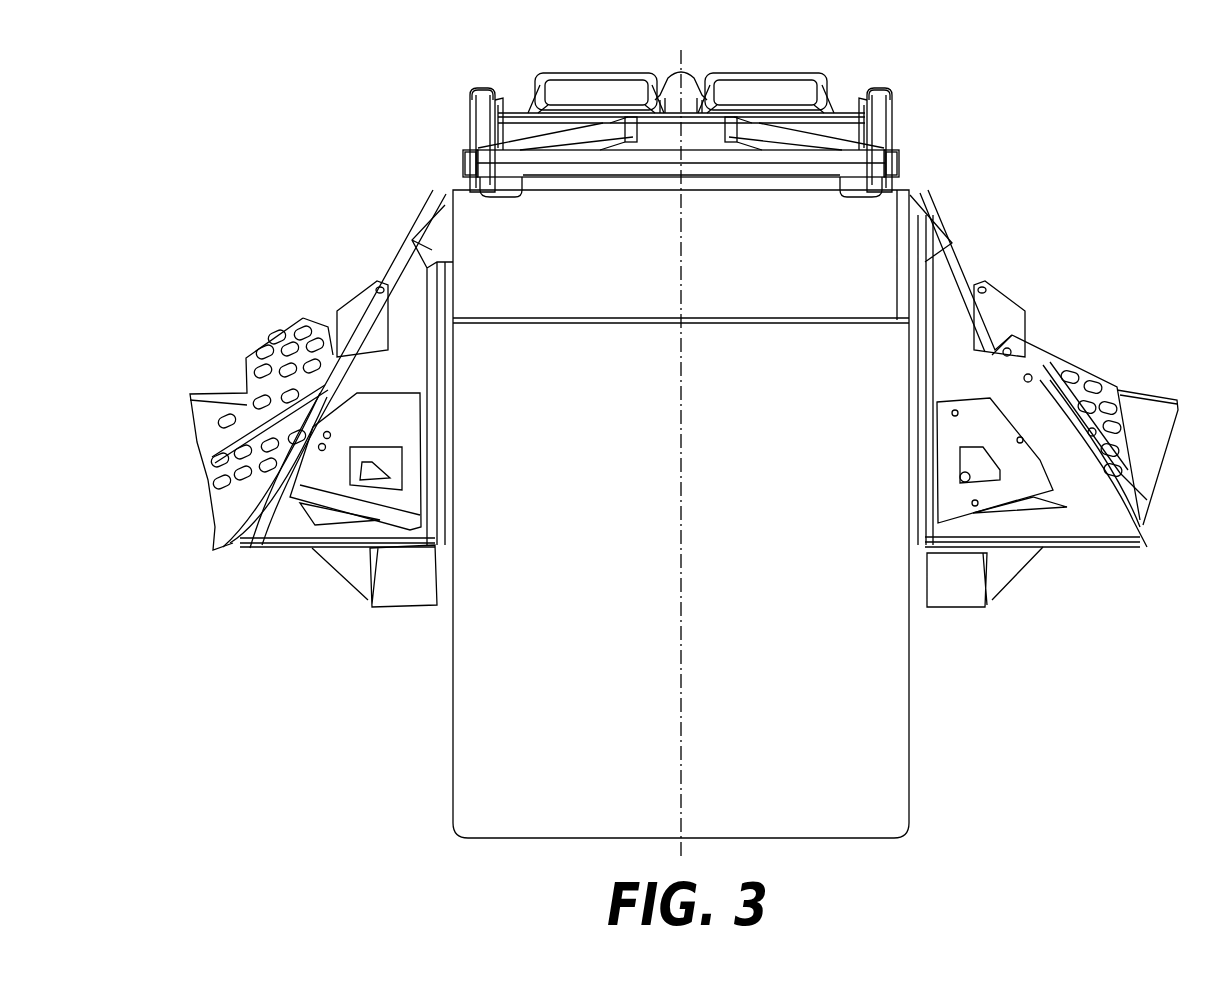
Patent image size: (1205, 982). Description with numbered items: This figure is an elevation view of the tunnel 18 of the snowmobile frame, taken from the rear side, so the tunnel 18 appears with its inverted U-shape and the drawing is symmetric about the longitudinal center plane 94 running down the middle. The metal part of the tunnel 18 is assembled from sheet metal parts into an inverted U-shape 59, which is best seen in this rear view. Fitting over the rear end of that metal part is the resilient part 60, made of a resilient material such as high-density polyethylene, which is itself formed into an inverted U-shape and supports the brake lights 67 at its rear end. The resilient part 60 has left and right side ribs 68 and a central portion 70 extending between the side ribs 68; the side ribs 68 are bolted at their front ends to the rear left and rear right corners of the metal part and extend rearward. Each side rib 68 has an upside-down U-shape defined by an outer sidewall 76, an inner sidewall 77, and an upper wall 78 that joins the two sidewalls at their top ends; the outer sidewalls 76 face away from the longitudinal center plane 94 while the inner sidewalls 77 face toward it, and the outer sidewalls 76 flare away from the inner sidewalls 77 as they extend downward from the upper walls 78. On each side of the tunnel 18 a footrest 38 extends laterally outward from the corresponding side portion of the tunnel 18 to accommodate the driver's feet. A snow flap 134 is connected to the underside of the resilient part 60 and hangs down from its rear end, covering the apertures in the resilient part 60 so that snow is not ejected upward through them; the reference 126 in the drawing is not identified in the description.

The tunnel 18 is at (170, 68).
The cab frame assembly 126 is at (175, 112).
The footrest 38 is at (379, 444).
The inverted U-shape 59 is at (415, 196).
The resilient part 60 is at (885, 130).
The brake lights 67 is at (462, 155).
The side ribs 68 is at (468, 85).
The central portion 70 is at (700, 55).
The outer sidewall 76 is at (460, 120).
The inner sidewall 77 is at (505, 97).
The upper wall 78 is at (488, 83).
The longitudinal center plane 94 is at (681, 750).
The snow flap 134 is at (786, 560).